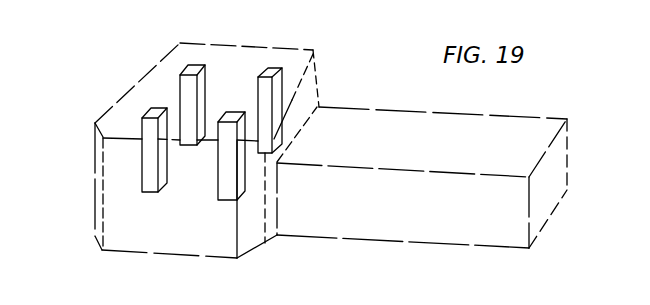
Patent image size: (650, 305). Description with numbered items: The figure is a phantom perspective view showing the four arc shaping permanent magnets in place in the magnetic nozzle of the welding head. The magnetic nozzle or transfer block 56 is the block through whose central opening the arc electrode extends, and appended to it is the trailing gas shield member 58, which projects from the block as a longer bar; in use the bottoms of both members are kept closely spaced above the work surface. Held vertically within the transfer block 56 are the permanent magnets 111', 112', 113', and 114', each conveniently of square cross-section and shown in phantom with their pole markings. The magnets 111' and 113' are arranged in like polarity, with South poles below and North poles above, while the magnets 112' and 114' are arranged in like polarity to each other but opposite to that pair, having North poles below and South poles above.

The magnetic nozzle or transfer block 56 is at (225, 136).
The trailing gas shield member 58 is at (447, 118).
The permanent magnet 111' is at (280, 158).
The permanent magnet 112' is at (92, 150).
The permanent magnet 113' is at (234, 76).
The permanent magnet 114' is at (322, 99).